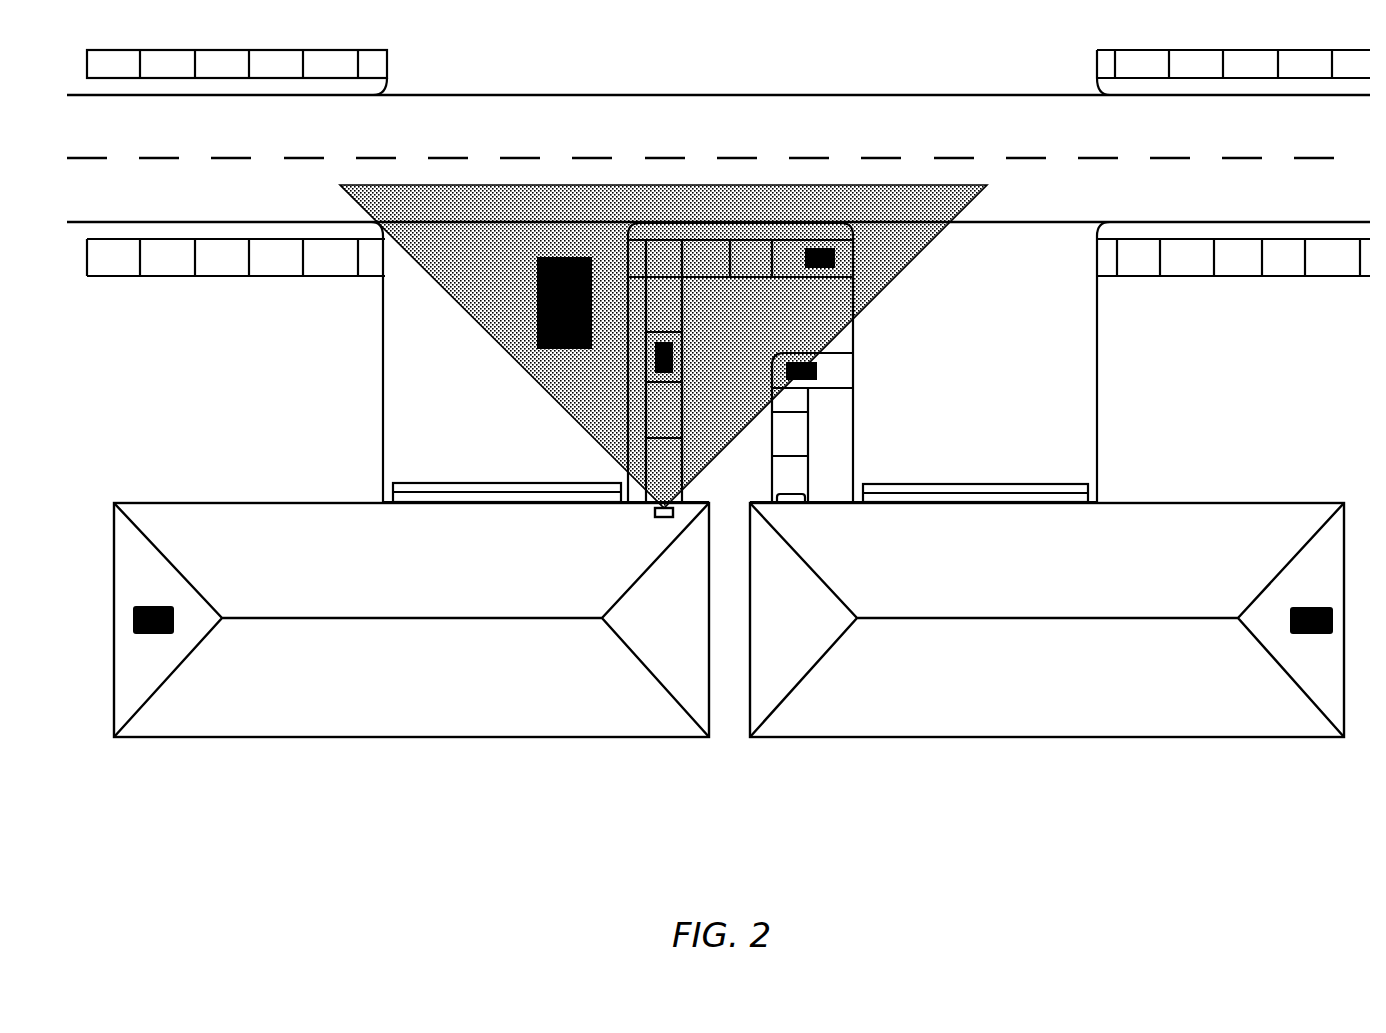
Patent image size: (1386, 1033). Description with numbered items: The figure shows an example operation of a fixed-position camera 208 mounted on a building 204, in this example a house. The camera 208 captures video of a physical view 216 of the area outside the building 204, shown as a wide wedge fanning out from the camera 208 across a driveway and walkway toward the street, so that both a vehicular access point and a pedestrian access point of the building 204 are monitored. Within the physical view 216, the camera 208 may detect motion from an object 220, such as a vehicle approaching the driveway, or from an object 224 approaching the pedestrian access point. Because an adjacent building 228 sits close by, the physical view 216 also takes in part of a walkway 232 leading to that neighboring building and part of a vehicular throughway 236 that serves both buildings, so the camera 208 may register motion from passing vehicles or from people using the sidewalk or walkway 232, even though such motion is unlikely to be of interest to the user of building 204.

The building 204 is at (532, 737).
The fixed-position camera 208 is at (655, 513).
The physical view 216 is at (420, 185).
The object 220 is at (568, 257).
The object 224 is at (673, 350).
The adjacent building 228 is at (820, 737).
The walkway 232 is at (840, 380).
The vehicular throughway 236 is at (463, 95).